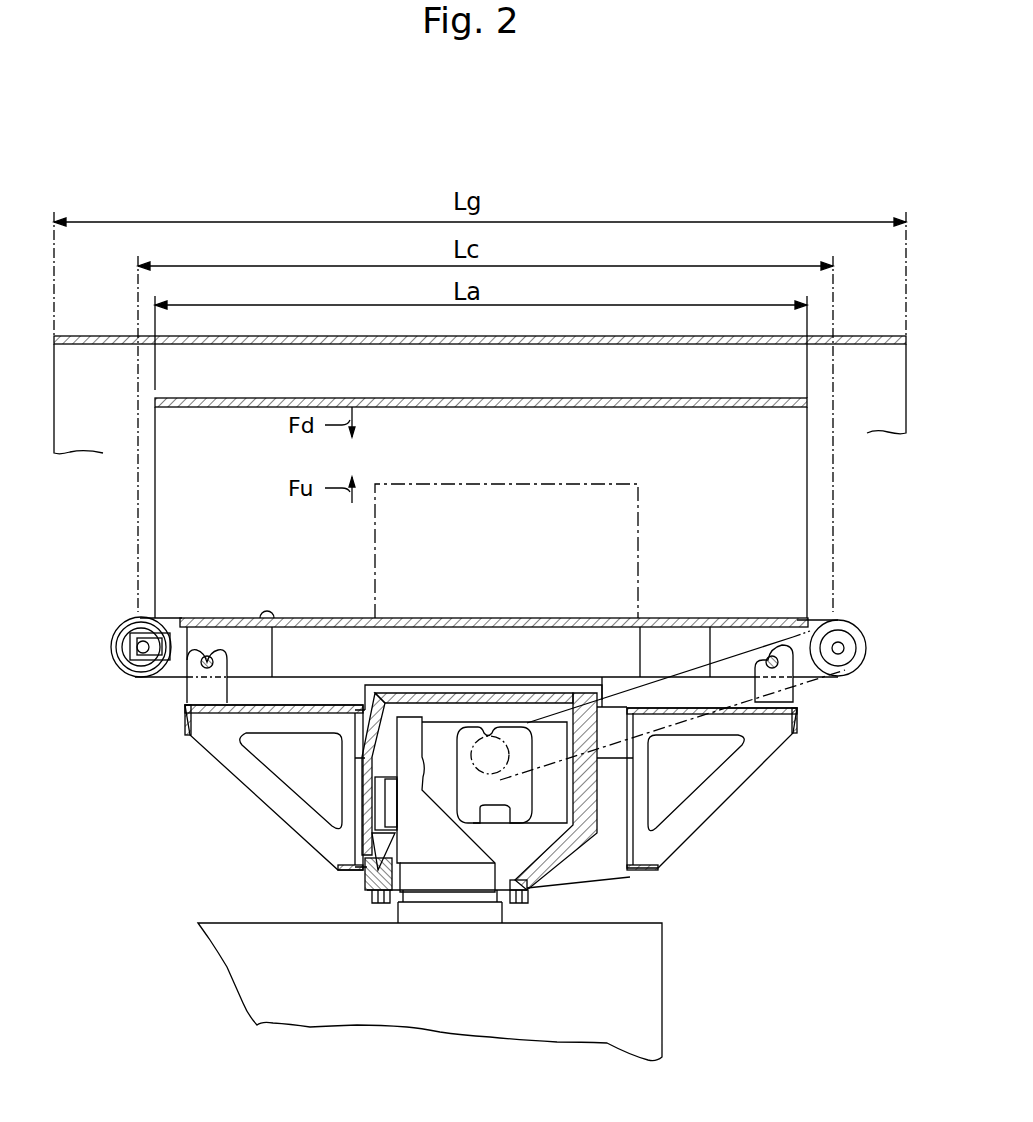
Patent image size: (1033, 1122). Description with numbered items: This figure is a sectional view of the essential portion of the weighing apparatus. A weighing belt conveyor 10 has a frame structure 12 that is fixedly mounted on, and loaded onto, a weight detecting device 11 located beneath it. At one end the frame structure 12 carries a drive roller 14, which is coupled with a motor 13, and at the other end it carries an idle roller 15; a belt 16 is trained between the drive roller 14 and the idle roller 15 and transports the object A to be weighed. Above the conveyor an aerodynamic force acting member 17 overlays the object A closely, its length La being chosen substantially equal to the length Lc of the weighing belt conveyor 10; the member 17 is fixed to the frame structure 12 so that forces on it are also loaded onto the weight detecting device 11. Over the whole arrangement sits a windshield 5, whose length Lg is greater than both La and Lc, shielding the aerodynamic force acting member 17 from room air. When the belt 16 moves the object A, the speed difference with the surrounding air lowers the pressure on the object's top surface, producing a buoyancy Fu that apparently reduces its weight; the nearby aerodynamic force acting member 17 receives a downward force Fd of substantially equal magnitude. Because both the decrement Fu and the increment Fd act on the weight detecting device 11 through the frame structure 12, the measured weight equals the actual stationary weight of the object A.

The windshield 5 is at (702, 345).
The aerodynamic force acting member 17 is at (487, 398).
The object to be weighed A is at (620, 484).
The weighing belt conveyor 10 is at (762, 613).
The frame structure 12 is at (293, 667).
The belt 16 is at (262, 621).
The idle roller 15 is at (140, 619).
The drive roller 14 is at (848, 677).
The weight detecting device 11 is at (733, 797).
The motor 13 is at (488, 750).